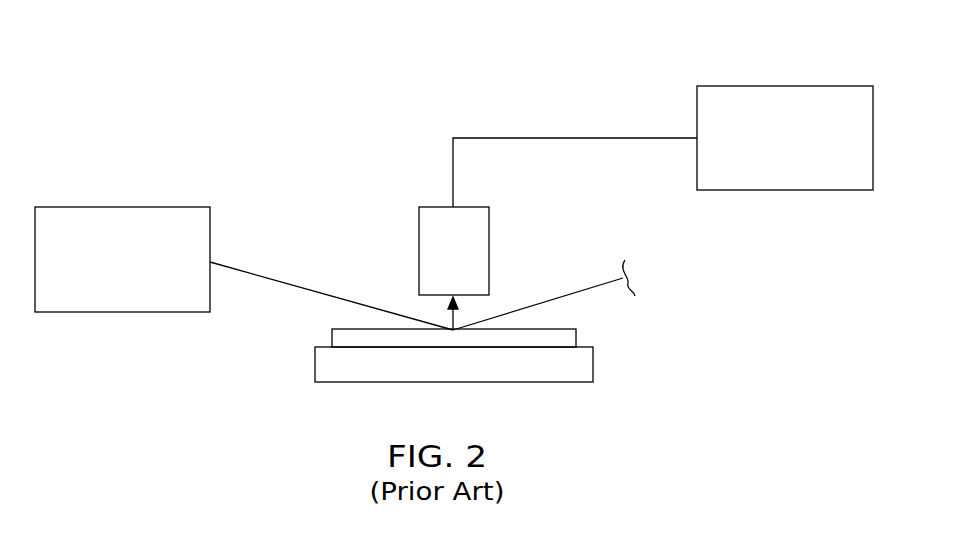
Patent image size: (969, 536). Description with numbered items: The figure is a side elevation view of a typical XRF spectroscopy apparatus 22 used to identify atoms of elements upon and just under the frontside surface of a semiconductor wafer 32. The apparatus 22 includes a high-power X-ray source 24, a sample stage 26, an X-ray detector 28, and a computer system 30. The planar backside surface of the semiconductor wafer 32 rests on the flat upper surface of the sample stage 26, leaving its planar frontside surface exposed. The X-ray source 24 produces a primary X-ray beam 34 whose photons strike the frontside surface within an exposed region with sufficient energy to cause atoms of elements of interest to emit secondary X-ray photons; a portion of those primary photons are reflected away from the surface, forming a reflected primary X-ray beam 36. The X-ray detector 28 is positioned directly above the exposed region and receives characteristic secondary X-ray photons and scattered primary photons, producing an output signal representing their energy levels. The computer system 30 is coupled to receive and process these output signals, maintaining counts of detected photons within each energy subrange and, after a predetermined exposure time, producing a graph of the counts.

The XRF spectroscopy apparatus 22 is at (596, 64).
The high-power X-ray source 24 is at (109, 286).
The sample stage 26 is at (316, 365).
The X-ray detector 28 is at (441, 262).
The computer system 30 is at (772, 177).
The semiconductor wafer 32 is at (332, 340).
The primary X-ray beam 34 is at (280, 283).
The reflected primary X-ray beam 36 is at (577, 294).